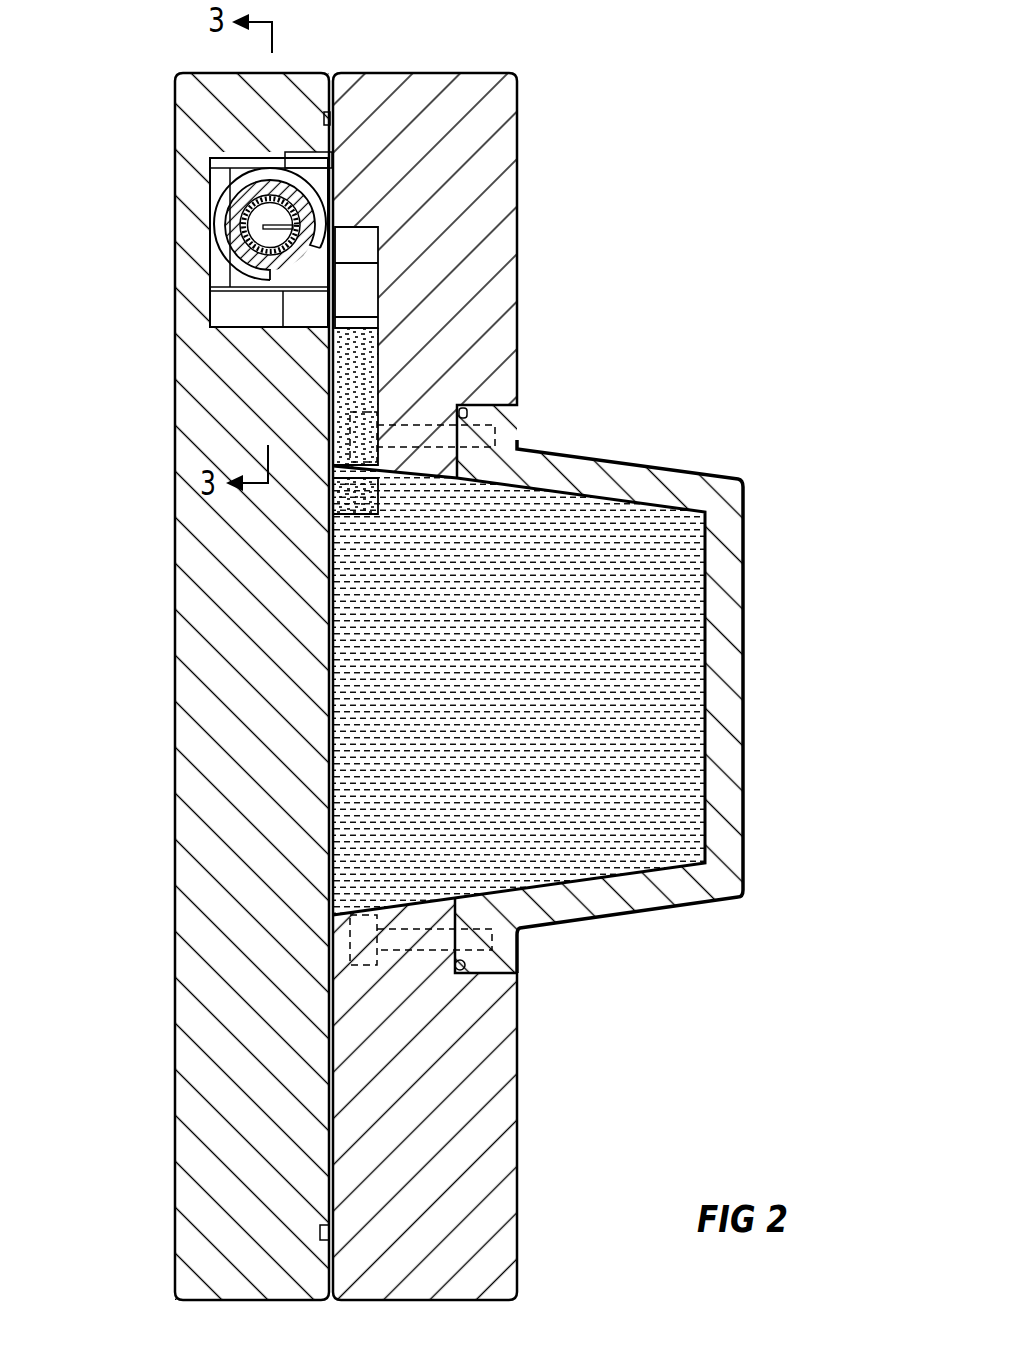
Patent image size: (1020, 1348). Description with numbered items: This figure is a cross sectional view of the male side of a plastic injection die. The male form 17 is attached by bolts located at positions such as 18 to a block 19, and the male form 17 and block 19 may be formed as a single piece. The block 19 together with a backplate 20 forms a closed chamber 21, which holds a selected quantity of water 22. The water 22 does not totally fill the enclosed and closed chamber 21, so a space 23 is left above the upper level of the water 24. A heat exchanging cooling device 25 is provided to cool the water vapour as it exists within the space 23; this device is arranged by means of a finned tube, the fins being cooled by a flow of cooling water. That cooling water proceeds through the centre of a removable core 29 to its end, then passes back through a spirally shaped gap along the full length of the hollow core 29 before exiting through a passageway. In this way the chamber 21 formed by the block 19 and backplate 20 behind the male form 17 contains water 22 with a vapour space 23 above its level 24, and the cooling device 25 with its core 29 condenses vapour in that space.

The male form 17 is at (633, 482).
The bolt position 18 is at (330, 442).
The block 19 is at (510, 278).
The backplate 20 is at (262, 945).
The closed chamber 21 is at (668, 610).
The water 22 is at (593, 682).
The space above water 23 is at (358, 282).
The upper level of the water 24 is at (357, 328).
The heat exchanging cooling device 25 is at (227, 240).
The removable core 29 is at (263, 217).